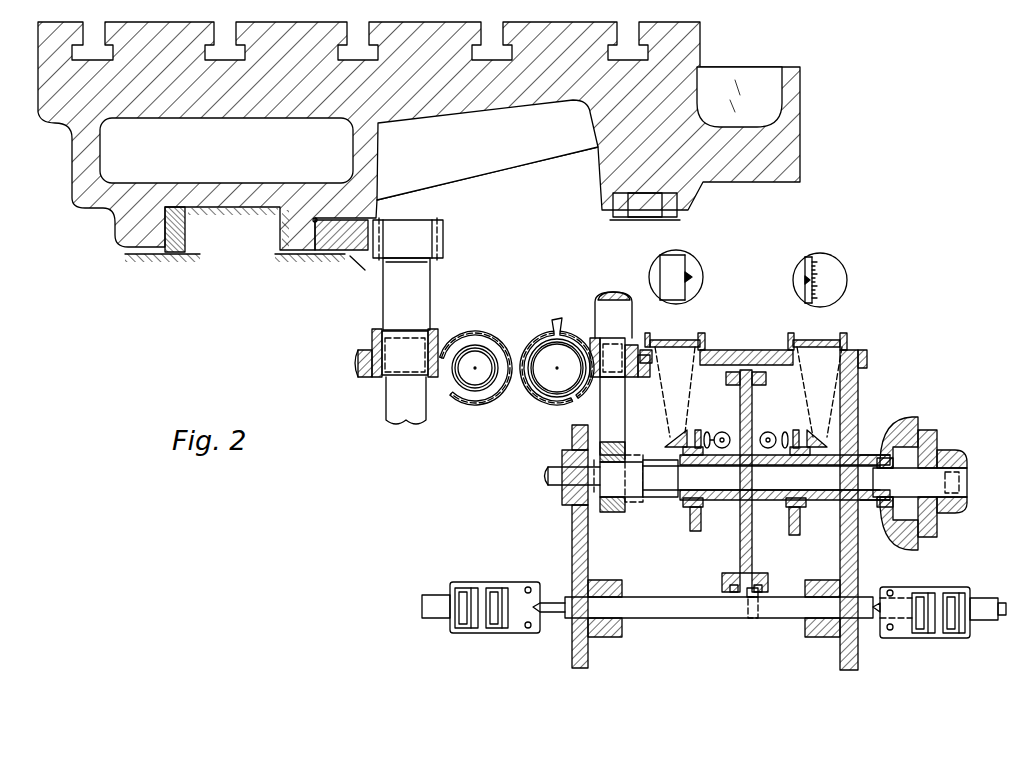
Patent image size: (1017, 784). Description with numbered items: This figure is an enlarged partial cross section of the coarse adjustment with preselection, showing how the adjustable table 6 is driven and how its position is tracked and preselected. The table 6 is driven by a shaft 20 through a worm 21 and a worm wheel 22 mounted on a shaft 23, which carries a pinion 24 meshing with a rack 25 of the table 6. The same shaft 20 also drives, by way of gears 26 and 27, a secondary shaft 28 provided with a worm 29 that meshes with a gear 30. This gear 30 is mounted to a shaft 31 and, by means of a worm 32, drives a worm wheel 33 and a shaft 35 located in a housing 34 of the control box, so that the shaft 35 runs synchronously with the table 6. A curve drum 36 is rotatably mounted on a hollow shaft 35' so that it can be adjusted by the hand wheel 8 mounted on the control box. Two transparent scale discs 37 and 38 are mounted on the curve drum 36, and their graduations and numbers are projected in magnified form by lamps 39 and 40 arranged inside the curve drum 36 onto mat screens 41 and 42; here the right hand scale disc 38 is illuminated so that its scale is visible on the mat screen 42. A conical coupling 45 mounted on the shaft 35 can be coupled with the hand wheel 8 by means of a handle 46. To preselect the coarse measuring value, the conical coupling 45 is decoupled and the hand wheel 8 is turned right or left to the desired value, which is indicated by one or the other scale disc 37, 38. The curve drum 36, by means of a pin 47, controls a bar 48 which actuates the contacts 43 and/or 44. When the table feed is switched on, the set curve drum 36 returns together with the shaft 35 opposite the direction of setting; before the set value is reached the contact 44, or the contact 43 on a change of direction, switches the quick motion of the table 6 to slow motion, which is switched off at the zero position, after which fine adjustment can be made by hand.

The table 6 is at (788, 130).
The hand wheel 8 is at (918, 425).
The shaft 20 is at (473, 372).
The worm 21 is at (464, 345).
The worm wheel 22 is at (372, 380).
The shaft 23 is at (402, 302).
The pinion 24 is at (425, 240).
The rack 25 is at (360, 242).
The gear 26 is at (492, 405).
The gear 27 is at (556, 405).
The secondary shaft 28 is at (555, 357).
The worm 29 is at (543, 353).
The gear 30 is at (591, 340).
The shaft 31 is at (615, 412).
The worm 32 is at (590, 497).
The worm wheel 33 is at (615, 513).
The housing 34 is at (578, 557).
The shaft 35 is at (766, 497).
The hollow shaft 35' is at (848, 506).
The curve drum 36 is at (752, 403).
The transparent scale disc 37 is at (697, 532).
The transparent scale disc 38 is at (792, 538).
The lamp 39 is at (720, 432).
The lamp 40 is at (769, 433).
The mat screen 41 is at (685, 338).
The mat screen 42 is at (827, 340).
The contact 43 is at (513, 625).
The contact 44 is at (903, 637).
The conical coupling 45 is at (923, 448).
The handle 46 is at (948, 520).
The pin 47 is at (752, 615).
The bar 48 is at (682, 612).